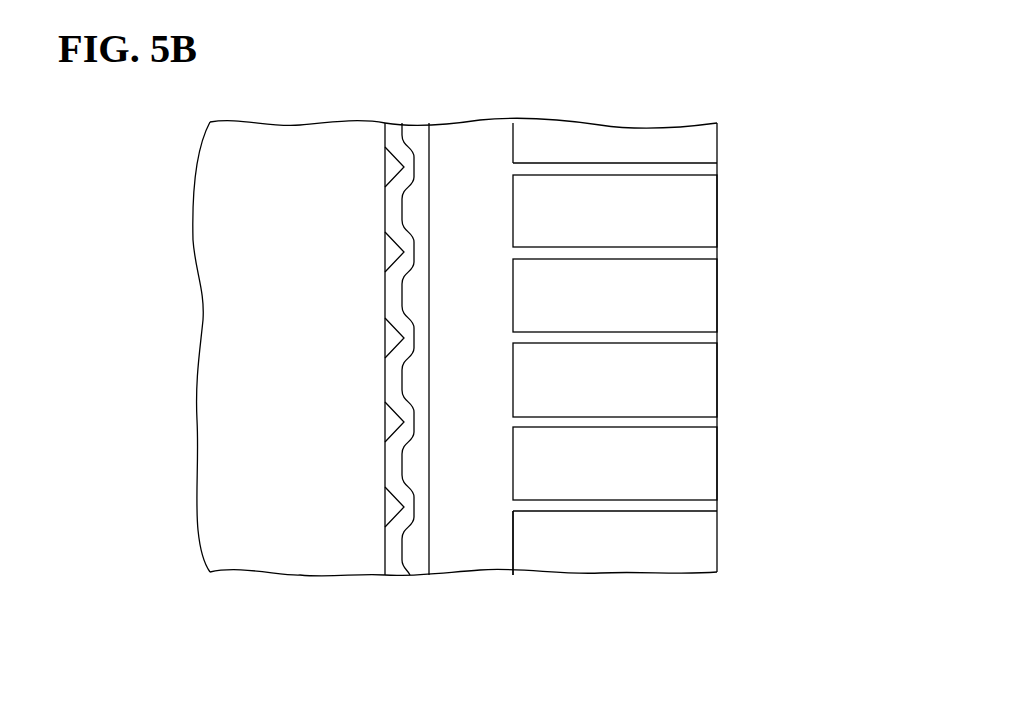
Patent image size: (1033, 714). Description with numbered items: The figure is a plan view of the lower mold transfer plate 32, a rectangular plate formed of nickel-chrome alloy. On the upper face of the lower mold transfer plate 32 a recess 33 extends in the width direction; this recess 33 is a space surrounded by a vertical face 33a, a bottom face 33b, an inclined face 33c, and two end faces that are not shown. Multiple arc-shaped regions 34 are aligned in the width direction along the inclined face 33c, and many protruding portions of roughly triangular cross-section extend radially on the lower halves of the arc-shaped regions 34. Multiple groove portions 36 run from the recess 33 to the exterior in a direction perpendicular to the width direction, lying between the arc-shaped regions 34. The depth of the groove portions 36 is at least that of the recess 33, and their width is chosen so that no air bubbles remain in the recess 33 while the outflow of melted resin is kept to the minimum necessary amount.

The lower mold transfer plate 32 is at (297, 547).
The recess 33 is at (590, 352).
The vertical face 33a is at (513, 543).
The bottom face 33b is at (470, 397).
The inclined face 33c is at (422, 557).
The arc-shaped regions 34 is at (388, 198).
The groove portions 36 is at (612, 163).